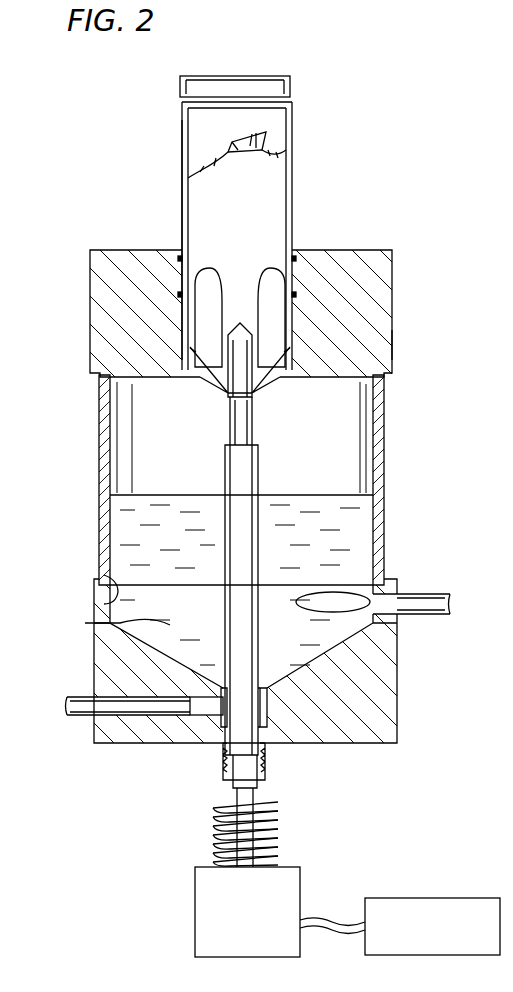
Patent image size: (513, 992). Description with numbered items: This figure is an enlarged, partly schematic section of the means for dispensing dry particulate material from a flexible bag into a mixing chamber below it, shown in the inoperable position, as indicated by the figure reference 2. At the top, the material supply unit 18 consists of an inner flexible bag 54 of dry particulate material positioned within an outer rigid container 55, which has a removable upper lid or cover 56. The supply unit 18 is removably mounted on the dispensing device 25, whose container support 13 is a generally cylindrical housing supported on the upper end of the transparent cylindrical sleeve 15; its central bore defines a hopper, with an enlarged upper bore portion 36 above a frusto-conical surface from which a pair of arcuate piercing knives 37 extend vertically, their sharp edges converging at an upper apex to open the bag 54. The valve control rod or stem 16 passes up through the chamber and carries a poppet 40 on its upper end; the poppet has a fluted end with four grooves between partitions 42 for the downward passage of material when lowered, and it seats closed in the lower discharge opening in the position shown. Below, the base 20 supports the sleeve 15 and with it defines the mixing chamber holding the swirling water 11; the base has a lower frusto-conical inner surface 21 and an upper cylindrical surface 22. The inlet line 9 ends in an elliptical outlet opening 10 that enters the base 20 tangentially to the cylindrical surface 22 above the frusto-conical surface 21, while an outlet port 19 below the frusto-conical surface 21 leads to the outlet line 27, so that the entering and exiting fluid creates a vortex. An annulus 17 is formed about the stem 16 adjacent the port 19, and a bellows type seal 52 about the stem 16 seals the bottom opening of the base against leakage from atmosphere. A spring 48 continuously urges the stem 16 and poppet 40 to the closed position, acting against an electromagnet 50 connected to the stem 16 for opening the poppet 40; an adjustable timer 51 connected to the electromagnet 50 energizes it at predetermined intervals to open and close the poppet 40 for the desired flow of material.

The apparatus 2 is at (506, 659).
The inlet line 9 is at (430, 614).
The elliptical outlet opening 10 is at (330, 598).
The liquid 11 is at (340, 495).
The container support 13 is at (106, 305).
The transparent cylindrical sleeve 15 is at (100, 440).
The valve control rod or stem 16 is at (256, 465).
The annulus 17 is at (266, 705).
The material supply unit 18 is at (172, 146).
The outlet port 19 is at (205, 708).
The base 20 is at (400, 700).
The frusto-conical inner surface 21 is at (130, 620).
The cylindrical surface 22 is at (110, 582).
The dispensing device 25 is at (394, 337).
The outlet line 27 is at (70, 720).
The enlarged upper bore portion 36 is at (290, 318).
The arcuate piercing blades or knives 37 is at (268, 297).
The valve member or poppet 40 is at (498, 352).
The partitions 42 is at (452, 980).
The spring 48 is at (280, 832).
The electromagnet 50 is at (195, 908).
The adjustable timer 51 is at (426, 898).
The bellows type seal 52 is at (222, 770).
The flexible bag 54 is at (265, 202).
The rigid container 55 is at (184, 196).
The upper lid or cover 56 is at (268, 76).